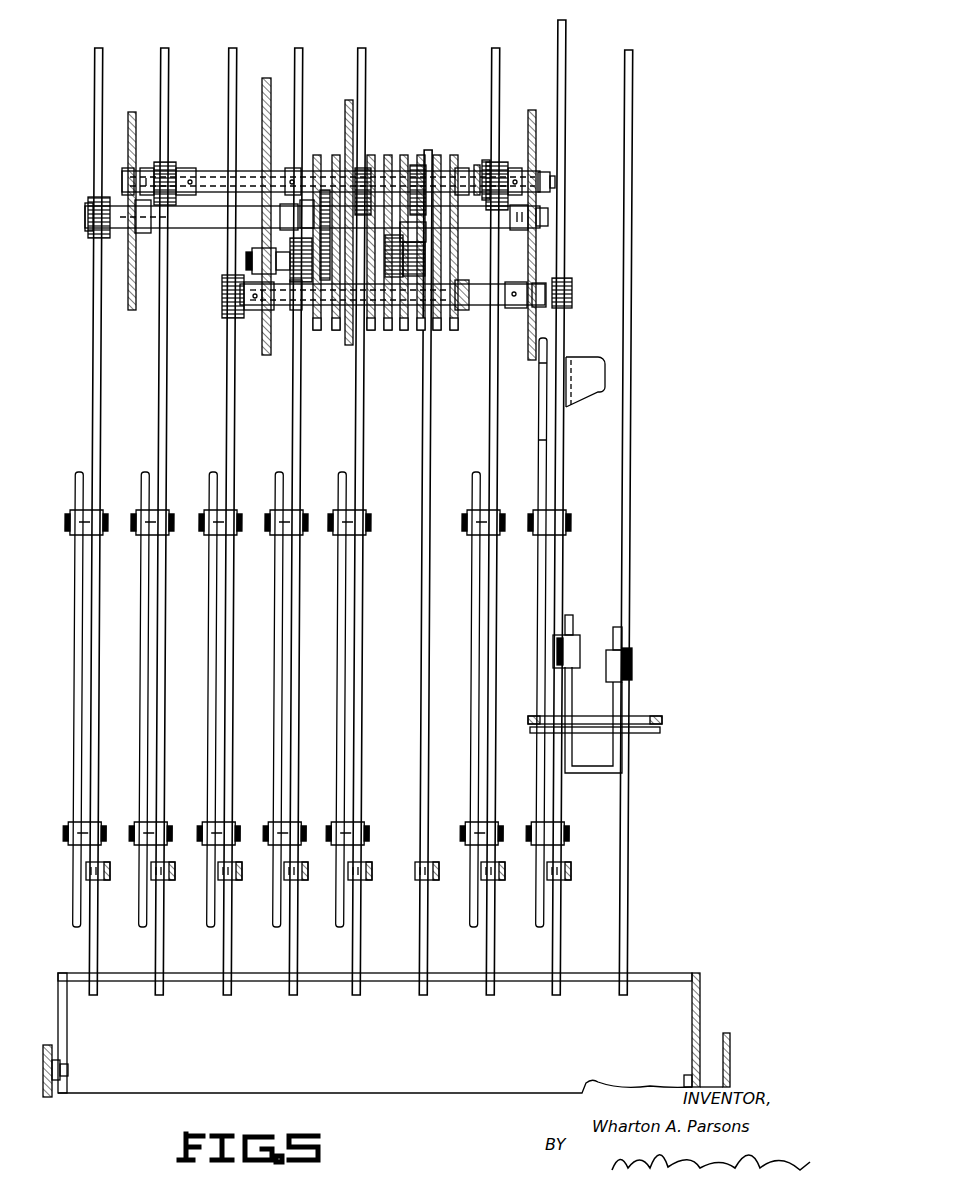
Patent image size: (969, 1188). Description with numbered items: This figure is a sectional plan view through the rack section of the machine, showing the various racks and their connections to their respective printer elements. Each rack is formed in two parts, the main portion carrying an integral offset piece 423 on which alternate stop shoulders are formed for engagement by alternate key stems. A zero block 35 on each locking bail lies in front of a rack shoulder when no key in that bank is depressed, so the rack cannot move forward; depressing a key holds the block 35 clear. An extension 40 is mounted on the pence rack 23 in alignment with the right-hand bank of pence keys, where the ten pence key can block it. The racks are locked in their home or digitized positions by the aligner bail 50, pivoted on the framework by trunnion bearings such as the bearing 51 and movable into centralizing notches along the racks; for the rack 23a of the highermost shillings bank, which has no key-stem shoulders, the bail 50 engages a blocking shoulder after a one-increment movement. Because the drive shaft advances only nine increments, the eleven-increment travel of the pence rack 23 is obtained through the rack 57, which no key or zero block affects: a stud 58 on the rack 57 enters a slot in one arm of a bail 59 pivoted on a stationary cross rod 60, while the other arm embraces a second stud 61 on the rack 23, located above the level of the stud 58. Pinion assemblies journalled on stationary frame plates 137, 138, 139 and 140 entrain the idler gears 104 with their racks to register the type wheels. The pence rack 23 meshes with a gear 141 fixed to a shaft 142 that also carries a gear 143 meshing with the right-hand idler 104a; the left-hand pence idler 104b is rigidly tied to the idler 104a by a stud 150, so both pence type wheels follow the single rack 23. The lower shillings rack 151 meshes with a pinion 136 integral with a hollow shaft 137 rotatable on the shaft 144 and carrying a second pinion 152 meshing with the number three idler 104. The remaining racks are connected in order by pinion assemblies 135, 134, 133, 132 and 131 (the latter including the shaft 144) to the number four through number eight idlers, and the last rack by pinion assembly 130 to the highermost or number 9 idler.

The vertical rod 9 is at (365, 476).
The pence rack 23 is at (566, 230).
The rack 23a is at (425, 562).
The zero block 35 is at (417, 872).
The extension 40 is at (604, 360).
The aligner bail 50 is at (386, 974).
The trunnion bearing 51 is at (74, 1072).
The rack 57 is at (632, 506).
The stud 58 is at (610, 664).
The bail 59 is at (601, 774).
The stationary cross rod 60 is at (645, 716).
The second stud 61 is at (576, 646).
The idler gear 104 is at (336, 332).
The right-hand pence idler gear 104a is at (437, 335).
The left-hand pence idler gear 104b is at (442, 335).
The pinion assembly 130 is at (90, 206).
The pinion assembly 131 is at (174, 176).
The pinion assembly 132 is at (246, 318).
The pinion assembly 133 is at (284, 252).
The pinion assembly 134 is at (364, 168).
The pinion assembly 135 is at (426, 245).
The pinion 136 is at (486, 168).
The stationary frame plate 137 is at (146, 96).
The stationary frame plate 138 is at (282, 66).
The stationary frame plate 139 is at (352, 105).
The stationary frame plate 140 is at (548, 96).
The gear 141 is at (550, 294).
The shaft 142 is at (568, 278).
The gear 143 is at (452, 332).
The shaft 144 is at (214, 172).
The stud 150 is at (440, 240).
The lower order shillings rack 151 is at (498, 58).
The second pinion 152 is at (412, 165).
The offset piece 423 is at (545, 486).